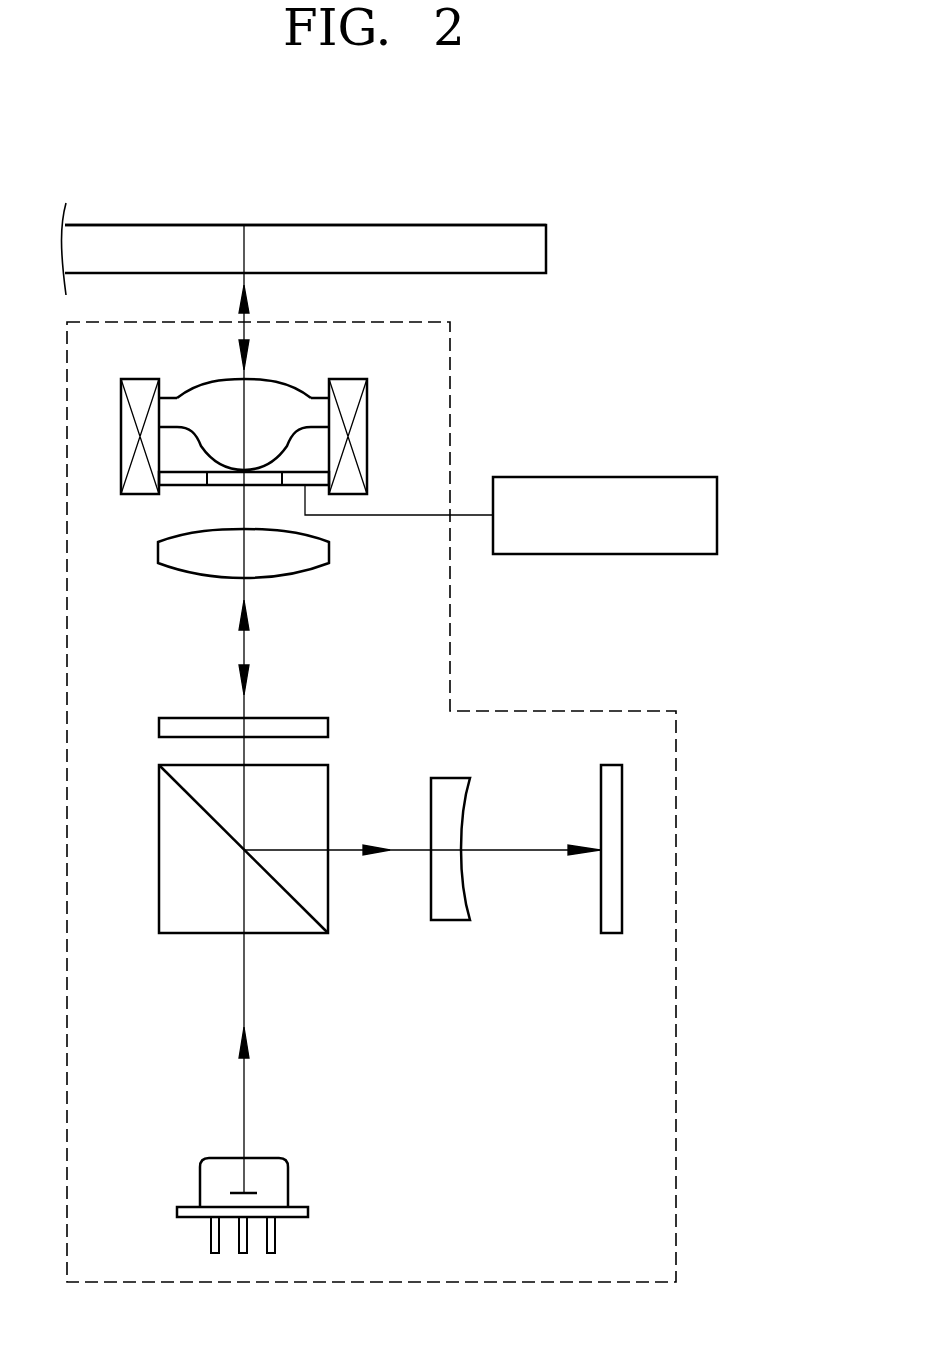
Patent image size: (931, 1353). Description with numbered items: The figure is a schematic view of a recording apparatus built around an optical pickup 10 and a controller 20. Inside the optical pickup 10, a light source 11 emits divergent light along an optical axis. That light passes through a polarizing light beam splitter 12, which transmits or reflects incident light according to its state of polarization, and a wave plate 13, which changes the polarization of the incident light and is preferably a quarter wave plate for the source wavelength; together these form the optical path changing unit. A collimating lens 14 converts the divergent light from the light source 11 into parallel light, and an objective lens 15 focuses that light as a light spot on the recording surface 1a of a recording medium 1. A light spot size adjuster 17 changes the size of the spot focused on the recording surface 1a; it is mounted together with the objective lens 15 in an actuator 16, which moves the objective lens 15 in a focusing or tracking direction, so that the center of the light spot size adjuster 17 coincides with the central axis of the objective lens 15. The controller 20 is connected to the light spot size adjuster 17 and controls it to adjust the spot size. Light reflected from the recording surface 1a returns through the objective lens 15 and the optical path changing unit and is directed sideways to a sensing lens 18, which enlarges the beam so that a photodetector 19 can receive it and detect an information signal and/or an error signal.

The recording medium 1 is at (562, 182).
The recording surface 1a is at (428, 226).
The optical pickup 10 is at (676, 1095).
The light source 11 is at (280, 1183).
The polarizing light beam splitter 12 is at (168, 861).
The wave plate 13 is at (322, 727).
The collimating lens 14 is at (315, 556).
The objective lens 15 is at (274, 393).
The actuator 16 is at (358, 437).
The light spot size adjuster 17 is at (170, 498).
The sensing lens 18 is at (452, 913).
The photodetector 19 is at (612, 928).
The controller 20 is at (717, 515).